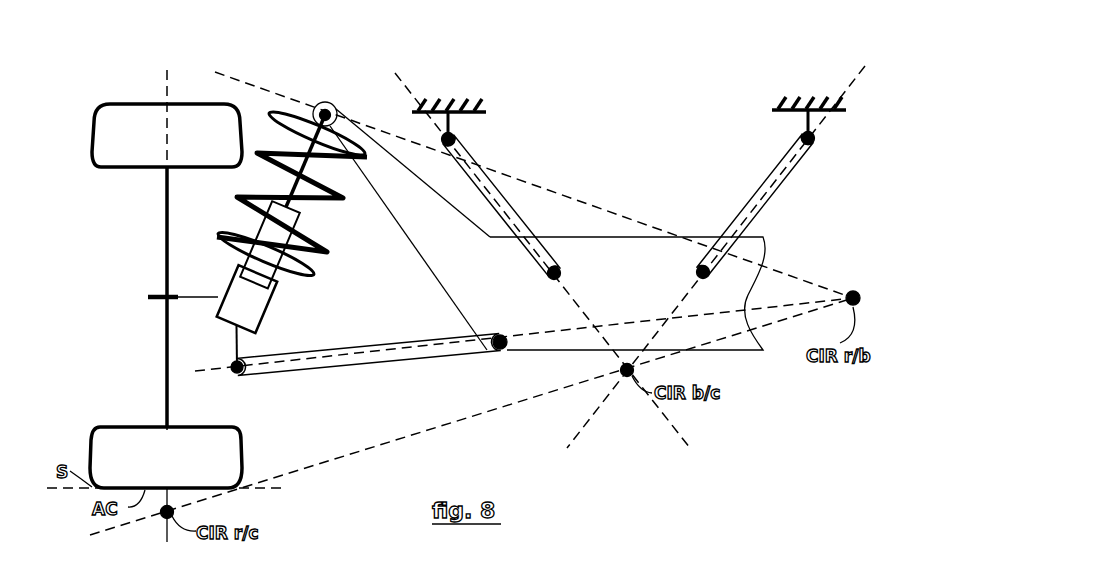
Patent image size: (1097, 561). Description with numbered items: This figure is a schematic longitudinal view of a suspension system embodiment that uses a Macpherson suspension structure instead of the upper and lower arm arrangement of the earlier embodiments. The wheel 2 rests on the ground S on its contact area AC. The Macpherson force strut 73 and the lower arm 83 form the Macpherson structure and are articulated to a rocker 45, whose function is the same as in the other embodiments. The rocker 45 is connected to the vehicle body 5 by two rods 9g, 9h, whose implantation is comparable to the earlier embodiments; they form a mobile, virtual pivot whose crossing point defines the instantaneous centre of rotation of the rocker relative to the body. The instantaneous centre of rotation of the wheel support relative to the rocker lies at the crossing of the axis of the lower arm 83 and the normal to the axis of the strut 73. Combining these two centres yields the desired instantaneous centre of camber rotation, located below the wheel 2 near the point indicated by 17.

The wheel 2 is at (93, 141).
The body 5 is at (487, 104).
The rod 9g is at (468, 146).
The rod 9h is at (788, 173).
The instantaneous center of rotation 17 is at (657, 447).
The rocker 45 is at (472, 288).
The Macpherson force strut 73 is at (278, 284).
The lower arm 83 is at (405, 360).